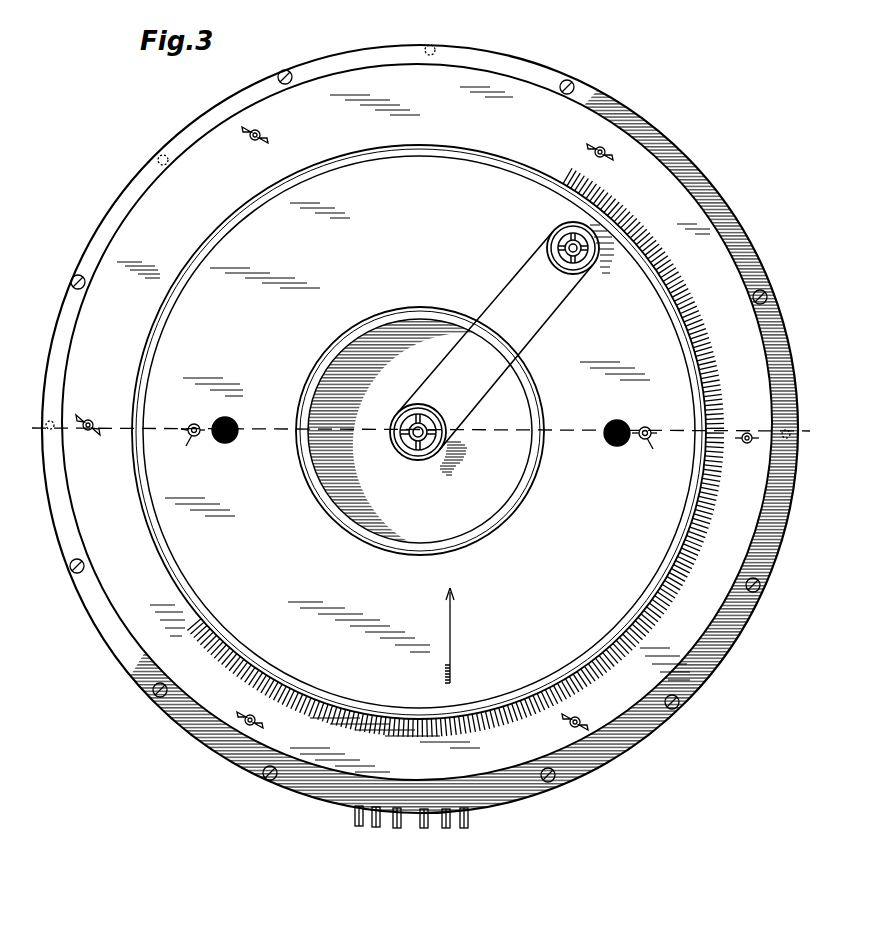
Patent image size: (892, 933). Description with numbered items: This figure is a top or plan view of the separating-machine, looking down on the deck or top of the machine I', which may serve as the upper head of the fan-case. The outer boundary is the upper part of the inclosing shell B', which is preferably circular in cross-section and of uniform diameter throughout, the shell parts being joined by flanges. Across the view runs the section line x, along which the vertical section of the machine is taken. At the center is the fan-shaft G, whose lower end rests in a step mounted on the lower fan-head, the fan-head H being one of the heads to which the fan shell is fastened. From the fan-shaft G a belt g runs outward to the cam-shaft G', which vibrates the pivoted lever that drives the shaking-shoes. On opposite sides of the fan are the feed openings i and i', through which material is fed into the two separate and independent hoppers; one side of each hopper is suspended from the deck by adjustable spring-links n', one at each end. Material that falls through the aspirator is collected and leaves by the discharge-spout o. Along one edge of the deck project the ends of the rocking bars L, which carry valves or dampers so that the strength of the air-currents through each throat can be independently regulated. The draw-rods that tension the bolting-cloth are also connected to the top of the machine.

The upper part of inclosing shell B′ is at (699, 668).
The section line x is at (414, 431).
The rocking bars L is at (466, 828).
The deck or top of the machine I′ is at (416, 429).
The fan-head H is at (420, 431).
The belt g is at (495, 340).
The fan-shaft G is at (424, 428).
The cam-shaft G′ is at (565, 258).
The feed opening i′ is at (225, 414).
The feed opening i is at (617, 420).
The adjustable spring-links n′ is at (425, 454).
The discharge-spout o is at (423, 382).